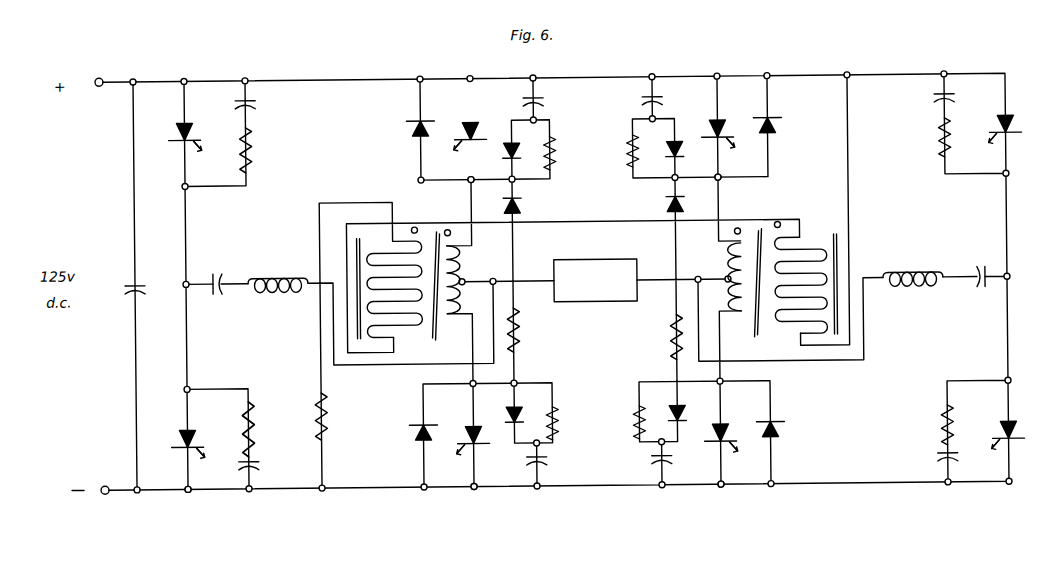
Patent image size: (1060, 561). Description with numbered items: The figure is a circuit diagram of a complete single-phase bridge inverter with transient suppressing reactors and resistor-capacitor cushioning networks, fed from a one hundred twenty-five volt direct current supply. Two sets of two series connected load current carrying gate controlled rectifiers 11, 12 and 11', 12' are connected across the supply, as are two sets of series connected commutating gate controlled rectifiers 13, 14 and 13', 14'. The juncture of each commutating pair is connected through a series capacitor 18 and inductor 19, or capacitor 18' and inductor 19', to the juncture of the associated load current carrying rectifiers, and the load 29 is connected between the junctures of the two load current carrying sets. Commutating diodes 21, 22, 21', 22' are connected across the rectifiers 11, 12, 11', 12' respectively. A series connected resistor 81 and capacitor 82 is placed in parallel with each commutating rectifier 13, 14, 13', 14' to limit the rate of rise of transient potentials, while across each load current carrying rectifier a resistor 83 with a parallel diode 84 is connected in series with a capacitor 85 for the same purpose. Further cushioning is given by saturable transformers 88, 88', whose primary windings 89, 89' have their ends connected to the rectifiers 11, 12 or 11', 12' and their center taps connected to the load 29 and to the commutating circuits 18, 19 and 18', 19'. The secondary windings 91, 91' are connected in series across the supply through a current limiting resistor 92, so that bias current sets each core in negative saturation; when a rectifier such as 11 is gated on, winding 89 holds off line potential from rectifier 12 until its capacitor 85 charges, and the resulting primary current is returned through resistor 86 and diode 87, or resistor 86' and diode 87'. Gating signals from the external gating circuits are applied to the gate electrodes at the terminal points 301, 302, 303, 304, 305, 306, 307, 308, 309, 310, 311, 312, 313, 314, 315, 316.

The load current carrying gate controlled rectifier 11 is at (475, 123).
The load current carrying gate controlled rectifier 11' is at (724, 122).
The load current carrying gate controlled rectifier 12 is at (467, 433).
The load current carrying gate controlled rectifier 12' is at (727, 430).
The commutating gate controlled rectifier 13 is at (192, 131).
The commutating gate controlled rectifier 13' is at (1012, 117).
The commutating gate controlled rectifier 14 is at (195, 438).
The commutating gate controlled rectifier 14' is at (1015, 424).
The capacitor 18 is at (221, 272).
The capacitor 18' is at (982, 260).
The inductor 19 is at (278, 270).
The inductor 19' is at (913, 261).
The commutating diode 21 is at (409, 119).
The commutating diode 21' is at (777, 109).
The commutating diode 22 is at (414, 422).
The commutating diode 22' is at (779, 416).
The load 29 is at (592, 260).
The resistor 81 is at (258, 134).
The capacitor 82 is at (258, 104).
The resistor 83 is at (557, 154).
The diode 84 is at (516, 151).
The capacitor 85 is at (545, 101).
The resistor 86 is at (526, 330).
The resistor 86' is at (660, 337).
The diode 87 is at (525, 207).
The diode 87' is at (659, 201).
The saturable transformer 88 is at (406, 299).
The saturable transformer 88' is at (787, 294).
The primary winding 89 is at (468, 279).
The primary winding 89' is at (714, 277).
The secondary winding 91 is at (407, 218).
The secondary winding 91' is at (805, 215).
The current limiting resistor 92 is at (330, 416).
The terminal 301 is at (720, 491).
The terminal 302 is at (734, 454).
The terminal 303 is at (722, 181).
The terminal 304 is at (729, 141).
The terminal 305 is at (1011, 486).
The terminal 306 is at (991, 456).
The terminal 307 is at (1010, 180).
The terminal 308 is at (1014, 143).
The terminal 309 is at (472, 491).
The terminal 310 is at (462, 453).
The terminal 311 is at (468, 182).
The terminal 312 is at (460, 150).
The terminal 313 is at (186, 491).
The terminal 314 is at (206, 467).
The terminal 315 is at (182, 186).
The terminal 316 is at (203, 160).